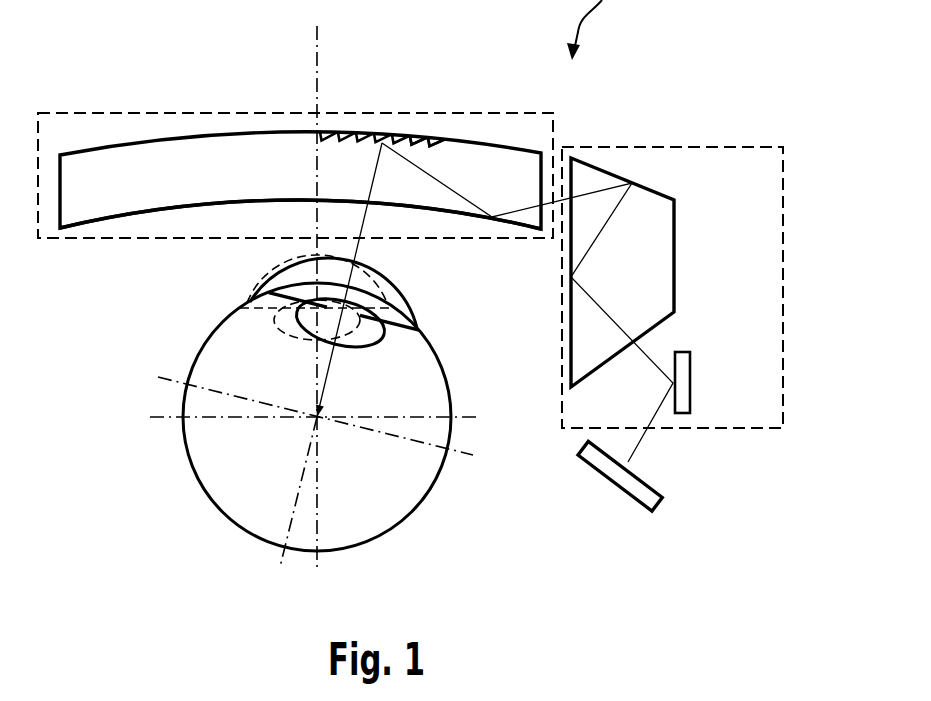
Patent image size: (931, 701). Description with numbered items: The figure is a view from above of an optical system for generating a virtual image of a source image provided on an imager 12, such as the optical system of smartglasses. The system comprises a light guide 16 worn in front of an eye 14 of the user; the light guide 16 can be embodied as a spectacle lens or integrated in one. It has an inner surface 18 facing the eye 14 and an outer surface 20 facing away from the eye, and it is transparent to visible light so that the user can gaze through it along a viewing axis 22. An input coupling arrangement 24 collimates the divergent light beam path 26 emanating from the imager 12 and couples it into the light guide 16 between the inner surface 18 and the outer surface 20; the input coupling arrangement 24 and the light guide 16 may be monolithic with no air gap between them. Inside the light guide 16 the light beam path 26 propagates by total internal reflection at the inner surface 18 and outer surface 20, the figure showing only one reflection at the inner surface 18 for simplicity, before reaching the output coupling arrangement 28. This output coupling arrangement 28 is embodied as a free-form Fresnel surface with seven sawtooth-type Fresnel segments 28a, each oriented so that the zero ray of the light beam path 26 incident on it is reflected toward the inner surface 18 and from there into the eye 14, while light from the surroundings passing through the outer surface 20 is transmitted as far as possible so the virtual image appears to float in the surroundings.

The imager 12 is at (600, 463).
The eye 14 is at (220, 474).
The light guide 16 is at (82, 203).
The inner surface 18 is at (127, 217).
The outer surface 20 is at (163, 137).
The viewing axis 22 is at (317, 30).
The input coupling arrangement 24 is at (783, 340).
The light beam path 26 is at (520, 211).
The output coupling arrangement 28 is at (340, 133).
The Fresnel segment 28a is at (432, 138).